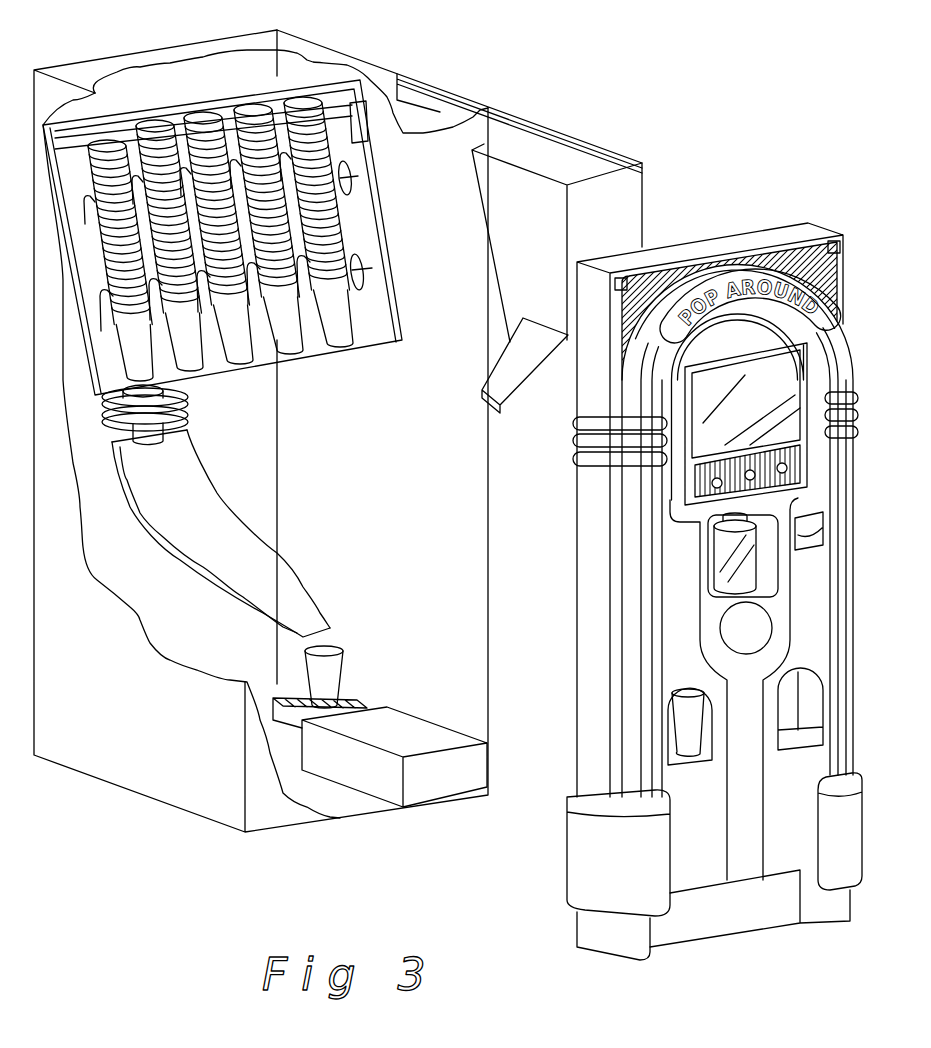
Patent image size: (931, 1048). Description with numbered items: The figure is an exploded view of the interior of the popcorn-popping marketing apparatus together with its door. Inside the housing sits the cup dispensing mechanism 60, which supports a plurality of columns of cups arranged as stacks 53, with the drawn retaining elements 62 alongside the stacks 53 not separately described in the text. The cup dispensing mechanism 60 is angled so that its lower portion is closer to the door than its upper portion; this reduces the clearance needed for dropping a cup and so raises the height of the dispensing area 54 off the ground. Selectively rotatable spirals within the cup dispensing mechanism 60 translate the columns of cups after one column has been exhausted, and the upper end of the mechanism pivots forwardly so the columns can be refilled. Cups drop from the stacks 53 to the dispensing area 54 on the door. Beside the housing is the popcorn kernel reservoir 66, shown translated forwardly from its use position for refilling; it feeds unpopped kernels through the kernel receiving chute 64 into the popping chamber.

The stacks of cups 53 is at (243, 74).
The dispensing area 54 is at (372, 669).
The cup dispensing mechanism 60 is at (370, 213).
The cup retaining clip 62 is at (352, 172).
The kernel receiving chute 64 is at (482, 377).
The popcorn kernel reservoir 66 is at (523, 272).